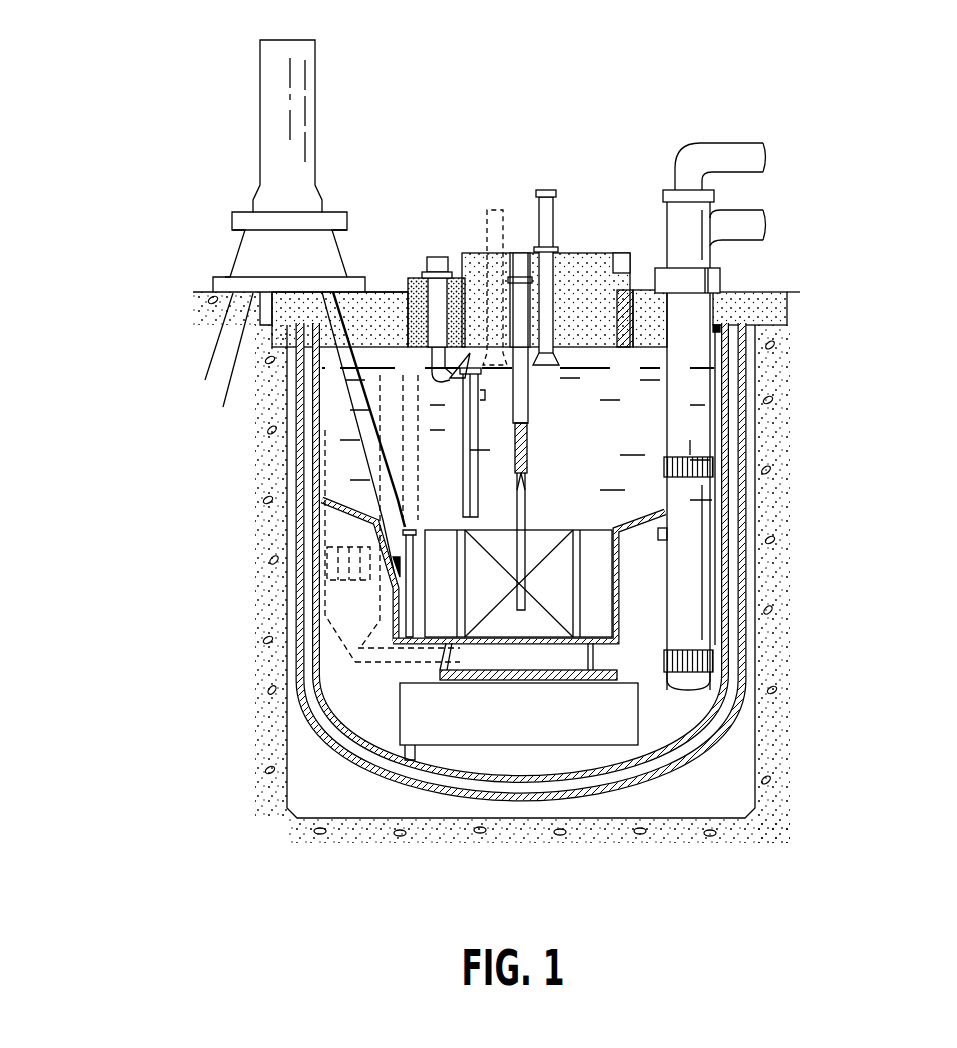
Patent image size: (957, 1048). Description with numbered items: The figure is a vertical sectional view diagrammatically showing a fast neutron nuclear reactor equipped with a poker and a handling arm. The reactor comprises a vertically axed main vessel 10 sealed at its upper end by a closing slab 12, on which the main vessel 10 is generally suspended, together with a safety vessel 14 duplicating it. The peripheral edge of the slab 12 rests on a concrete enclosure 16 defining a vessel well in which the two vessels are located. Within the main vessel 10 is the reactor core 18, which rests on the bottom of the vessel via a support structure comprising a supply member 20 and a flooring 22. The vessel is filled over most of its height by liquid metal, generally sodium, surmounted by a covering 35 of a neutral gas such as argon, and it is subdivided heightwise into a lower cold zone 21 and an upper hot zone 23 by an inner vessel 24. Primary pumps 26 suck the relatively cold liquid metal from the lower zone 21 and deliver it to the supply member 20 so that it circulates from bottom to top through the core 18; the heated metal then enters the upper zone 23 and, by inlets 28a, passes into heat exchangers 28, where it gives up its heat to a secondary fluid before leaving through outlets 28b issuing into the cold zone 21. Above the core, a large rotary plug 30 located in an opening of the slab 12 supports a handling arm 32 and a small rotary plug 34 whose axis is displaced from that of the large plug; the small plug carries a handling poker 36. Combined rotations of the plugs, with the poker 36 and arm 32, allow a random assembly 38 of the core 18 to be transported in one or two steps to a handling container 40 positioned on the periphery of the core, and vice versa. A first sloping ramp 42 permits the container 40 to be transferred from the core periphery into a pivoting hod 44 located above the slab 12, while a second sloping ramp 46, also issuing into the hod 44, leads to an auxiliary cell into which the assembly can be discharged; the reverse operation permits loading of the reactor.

The main vessel 10 is at (303, 670).
The closing slab 12 is at (743, 300).
The safety vessel 14 is at (298, 627).
The concrete enclosure 16 is at (206, 531).
The reactor core 18 is at (500, 625).
The supply member 20 is at (548, 712).
The lower cold zone 21 is at (612, 670).
The flooring 22 is at (625, 723).
The upper hot zone 23 is at (573, 455).
The inner vessel 24 is at (640, 536).
The primary pump 26 is at (340, 520).
The heat exchanger 28 is at (697, 548).
The inlet 28a is at (710, 462).
The outlet 28b is at (710, 664).
The large rotary plug 30 is at (407, 278).
The handling arm 32 is at (465, 440).
The small rotary plug 34 is at (583, 262).
The covering of neutral gas 35 is at (643, 350).
The handling poker 36 is at (532, 427).
The assembly 38 is at (525, 530).
The handling container 40 is at (410, 622).
The first sloping ramp 42 is at (358, 408).
The pivoting hod 44 is at (283, 78).
The second sloping ramp 46 is at (218, 368).